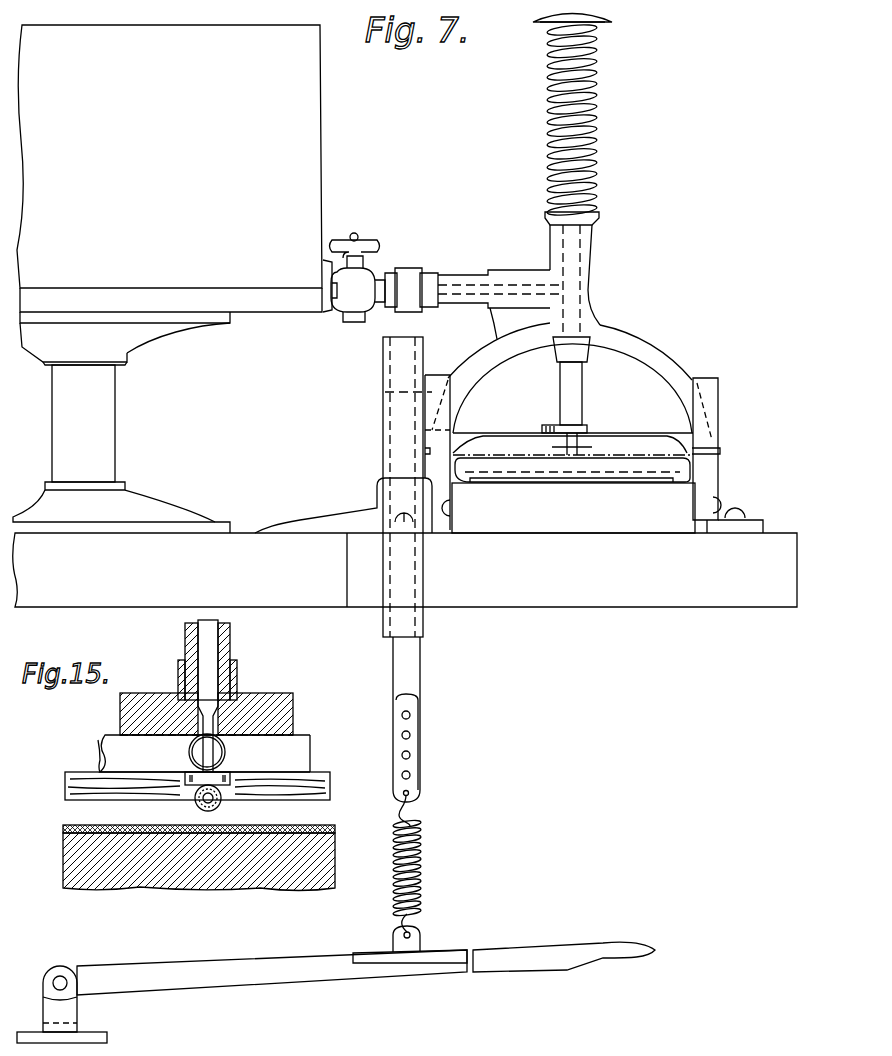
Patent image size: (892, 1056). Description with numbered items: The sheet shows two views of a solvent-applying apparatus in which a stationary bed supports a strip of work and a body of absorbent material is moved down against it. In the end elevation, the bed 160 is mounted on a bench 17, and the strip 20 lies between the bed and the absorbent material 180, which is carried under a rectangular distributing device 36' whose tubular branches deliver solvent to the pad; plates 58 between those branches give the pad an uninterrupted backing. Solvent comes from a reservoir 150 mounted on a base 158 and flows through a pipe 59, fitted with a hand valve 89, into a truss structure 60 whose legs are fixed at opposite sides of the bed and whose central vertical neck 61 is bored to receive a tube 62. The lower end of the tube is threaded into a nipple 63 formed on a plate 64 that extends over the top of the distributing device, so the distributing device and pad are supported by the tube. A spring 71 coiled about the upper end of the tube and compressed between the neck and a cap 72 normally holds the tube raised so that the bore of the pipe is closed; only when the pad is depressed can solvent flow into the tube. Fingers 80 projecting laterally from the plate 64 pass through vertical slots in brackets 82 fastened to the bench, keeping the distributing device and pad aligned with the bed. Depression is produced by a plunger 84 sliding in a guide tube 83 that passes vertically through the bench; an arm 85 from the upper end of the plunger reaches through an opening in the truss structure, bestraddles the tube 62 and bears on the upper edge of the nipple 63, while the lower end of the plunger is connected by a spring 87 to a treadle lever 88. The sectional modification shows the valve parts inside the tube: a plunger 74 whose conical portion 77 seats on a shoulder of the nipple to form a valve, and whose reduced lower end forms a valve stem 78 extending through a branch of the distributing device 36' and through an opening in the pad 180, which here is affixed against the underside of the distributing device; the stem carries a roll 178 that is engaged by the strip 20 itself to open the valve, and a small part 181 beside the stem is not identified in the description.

In FIG. 7, the reservoir 150 is at (169, 174).
In FIG. 7, the base 158 is at (125, 355).
In FIG. 7, the bench 17 is at (163, 597).
In FIG. 7, the hand valve 89 is at (376, 242).
In FIG. 7, the pipe 59 is at (460, 277).
In FIG. 7, the neck 61 is at (592, 248).
In FIG. 7, the spring 71 is at (597, 117).
In FIG. 7, the cap 72 is at (608, 18).
In FIG. 7, the truss structure 60 is at (640, 321).
In FIG. 7, the tube 62 is at (590, 381).
In FIG. 15, the tube 62 is at (231, 652).
In FIG. 7, the nipple 63 is at (588, 440).
In FIG. 15, the nipple 63 is at (182, 676).
In FIG. 7, the arm 85 is at (544, 426).
In FIG. 7, the plate 64 is at (625, 452).
In FIG. 7, the absorbent material 180 is at (523, 477).
In FIG. 15, the absorbent material 180 is at (331, 788).
In FIG. 7, the strip 20 is at (647, 482).
In FIG. 15, the strip 20 is at (336, 830).
In FIG. 7, the brackets 82 is at (718, 395).
In FIG. 7, the fingers 80 is at (720, 450).
In FIG. 7, the guide or tube 83 is at (383, 362).
In FIG. 7, the plunger 84 is at (422, 680).
In FIG. 7, the spring 87 is at (423, 865).
In FIG. 7, the treadle lever 88 is at (545, 945).
In FIG. 15, the plunger 74 is at (208, 638).
In FIG. 15, the conical portion 77 is at (224, 702).
In FIG. 15, the distributing device 36' is at (232, 747).
In FIG. 15, the plates 58 is at (282, 771).
In FIG. 15, the valve stem 78 is at (226, 750).
In FIG. 15, the bracket 181 is at (197, 802).
In FIG. 15, the roll 178 is at (222, 807).
In FIG. 15, the bed 160 is at (334, 862).